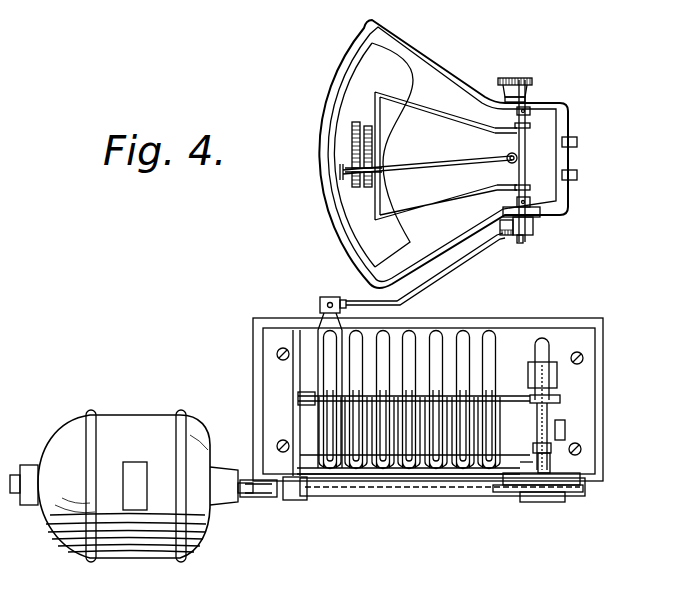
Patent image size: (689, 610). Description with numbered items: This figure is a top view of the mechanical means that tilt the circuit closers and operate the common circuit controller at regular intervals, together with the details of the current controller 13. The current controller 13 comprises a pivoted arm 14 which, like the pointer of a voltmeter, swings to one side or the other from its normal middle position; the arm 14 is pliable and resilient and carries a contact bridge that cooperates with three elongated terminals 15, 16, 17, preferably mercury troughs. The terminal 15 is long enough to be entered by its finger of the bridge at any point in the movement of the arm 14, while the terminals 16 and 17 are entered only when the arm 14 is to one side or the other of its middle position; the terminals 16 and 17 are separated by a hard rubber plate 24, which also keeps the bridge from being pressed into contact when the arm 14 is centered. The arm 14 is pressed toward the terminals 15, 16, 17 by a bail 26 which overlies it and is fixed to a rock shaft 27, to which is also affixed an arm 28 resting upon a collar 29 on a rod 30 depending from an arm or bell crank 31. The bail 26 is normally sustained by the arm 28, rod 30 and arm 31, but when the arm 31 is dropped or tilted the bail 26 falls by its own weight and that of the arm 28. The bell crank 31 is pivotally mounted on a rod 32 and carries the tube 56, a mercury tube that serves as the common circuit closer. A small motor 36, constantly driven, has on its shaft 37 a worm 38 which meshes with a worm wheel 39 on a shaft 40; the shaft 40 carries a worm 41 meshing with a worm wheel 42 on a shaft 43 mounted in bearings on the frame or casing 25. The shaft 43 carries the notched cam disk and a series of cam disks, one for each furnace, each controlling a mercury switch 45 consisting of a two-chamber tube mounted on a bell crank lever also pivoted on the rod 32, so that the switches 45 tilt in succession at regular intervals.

The current controller 13 is at (443, 72).
The pivoted arm 14 is at (462, 163).
The elongated terminal 15 is at (354, 158).
The terminal 16 is at (370, 142).
The hard rubber plate 24 is at (373, 154).
The terminal 17 is at (373, 180).
The bail 26 is at (418, 205).
The rock shaft 27 is at (528, 140).
The arm 28 is at (440, 280).
The collar 29 is at (330, 297).
The rod 30 is at (324, 298).
The arm or bell crank 31 is at (320, 313).
The frame or casing 25 is at (510, 333).
The mercury switch 45 is at (390, 337).
The tube 56 is at (328, 357).
The shaft 43 is at (303, 401).
The worm 41 is at (550, 397).
The worm wheel 42 is at (548, 432).
The shaft 40 is at (520, 462).
The worm wheel 39 is at (580, 493).
The worm 38 is at (553, 500).
The shaft 37 is at (427, 492).
The rod 32 is at (340, 468).
The small motor 36 is at (131, 486).